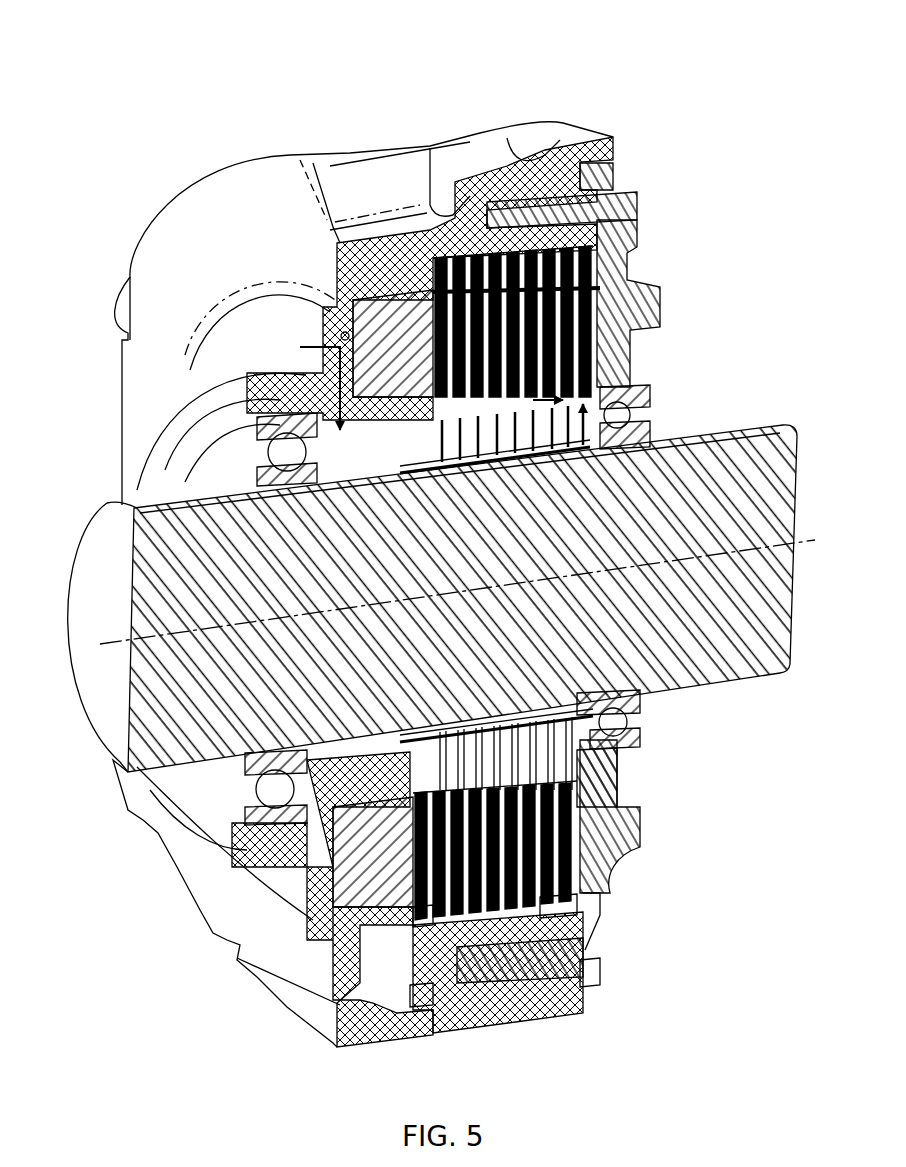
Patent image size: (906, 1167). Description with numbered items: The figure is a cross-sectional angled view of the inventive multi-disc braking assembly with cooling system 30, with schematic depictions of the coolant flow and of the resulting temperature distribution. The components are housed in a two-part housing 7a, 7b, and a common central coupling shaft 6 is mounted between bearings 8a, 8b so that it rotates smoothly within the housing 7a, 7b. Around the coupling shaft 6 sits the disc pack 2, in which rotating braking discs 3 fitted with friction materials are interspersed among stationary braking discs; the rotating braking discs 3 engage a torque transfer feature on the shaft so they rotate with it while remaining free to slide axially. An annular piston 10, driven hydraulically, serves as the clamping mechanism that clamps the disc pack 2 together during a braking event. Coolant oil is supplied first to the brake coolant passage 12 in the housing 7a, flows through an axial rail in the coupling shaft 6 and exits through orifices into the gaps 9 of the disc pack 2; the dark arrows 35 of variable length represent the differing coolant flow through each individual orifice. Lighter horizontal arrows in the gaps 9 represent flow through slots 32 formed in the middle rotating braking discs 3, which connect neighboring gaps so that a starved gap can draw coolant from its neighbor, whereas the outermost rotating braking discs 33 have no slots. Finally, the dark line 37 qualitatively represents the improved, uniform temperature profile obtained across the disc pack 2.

The multi-disc braking assembly with cooling system 30 is at (648, 82).
The housing (first part) 7a is at (228, 245).
The housing (second part) 7b is at (620, 277).
The brake coolant passage 12 is at (323, 338).
The dark line 37 is at (590, 290).
The arrows 35 is at (617, 417).
The coupling shaft 6 is at (107, 505).
The bearing 8b is at (640, 715).
The gaps 9 is at (590, 757).
The slots 32 is at (575, 788).
The bearing 8a is at (245, 807).
The annular piston 10 is at (360, 865).
The disc pack 2 is at (607, 890).
The rotating braking discs 3 is at (445, 913).
The outermost rotating braking discs 33 is at (420, 993).